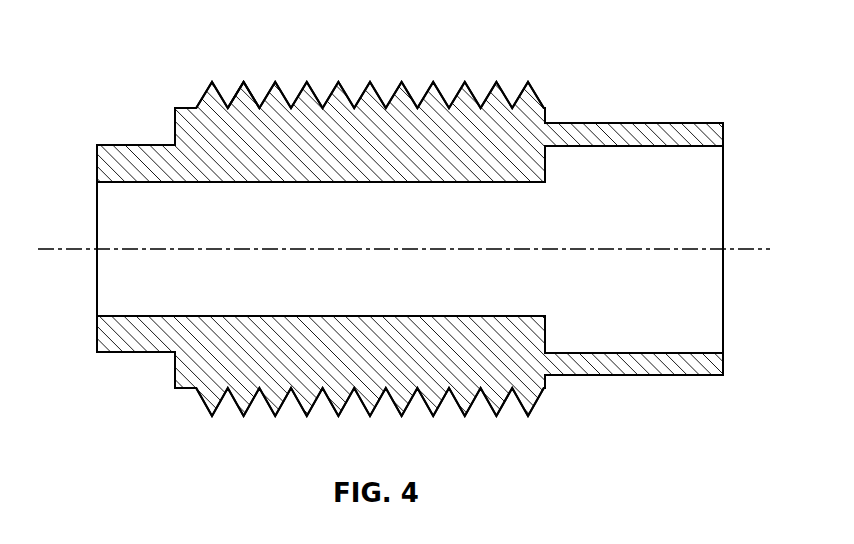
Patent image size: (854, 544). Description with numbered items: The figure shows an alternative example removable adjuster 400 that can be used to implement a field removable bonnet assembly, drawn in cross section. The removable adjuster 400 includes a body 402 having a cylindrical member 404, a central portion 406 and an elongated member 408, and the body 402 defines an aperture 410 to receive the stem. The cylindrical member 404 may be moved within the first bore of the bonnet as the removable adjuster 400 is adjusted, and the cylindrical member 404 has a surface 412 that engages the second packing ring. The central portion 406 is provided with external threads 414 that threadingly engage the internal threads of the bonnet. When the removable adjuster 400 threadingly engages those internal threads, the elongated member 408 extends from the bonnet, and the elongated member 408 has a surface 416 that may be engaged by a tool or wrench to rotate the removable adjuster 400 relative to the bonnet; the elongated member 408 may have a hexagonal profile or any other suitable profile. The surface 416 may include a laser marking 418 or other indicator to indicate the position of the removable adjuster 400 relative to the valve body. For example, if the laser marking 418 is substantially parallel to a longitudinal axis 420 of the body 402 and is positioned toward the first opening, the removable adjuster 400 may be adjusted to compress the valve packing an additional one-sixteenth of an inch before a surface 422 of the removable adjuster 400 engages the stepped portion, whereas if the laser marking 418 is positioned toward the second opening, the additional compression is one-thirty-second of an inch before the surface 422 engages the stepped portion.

The removable adjuster 400 is at (136, 48).
The body 402 is at (431, 113).
The cylindrical member 404 is at (128, 152).
The central portion 406 is at (243, 113).
The elongated member 408 is at (672, 132).
The aperture 410 is at (281, 181).
The surface 412 is at (97, 332).
The external threads 414 is at (365, 398).
The surface 416 is at (564, 122).
The laser marking 418 is at (626, 377).
The longitudinal axis 420 is at (733, 250).
The surface 422 is at (175, 367).